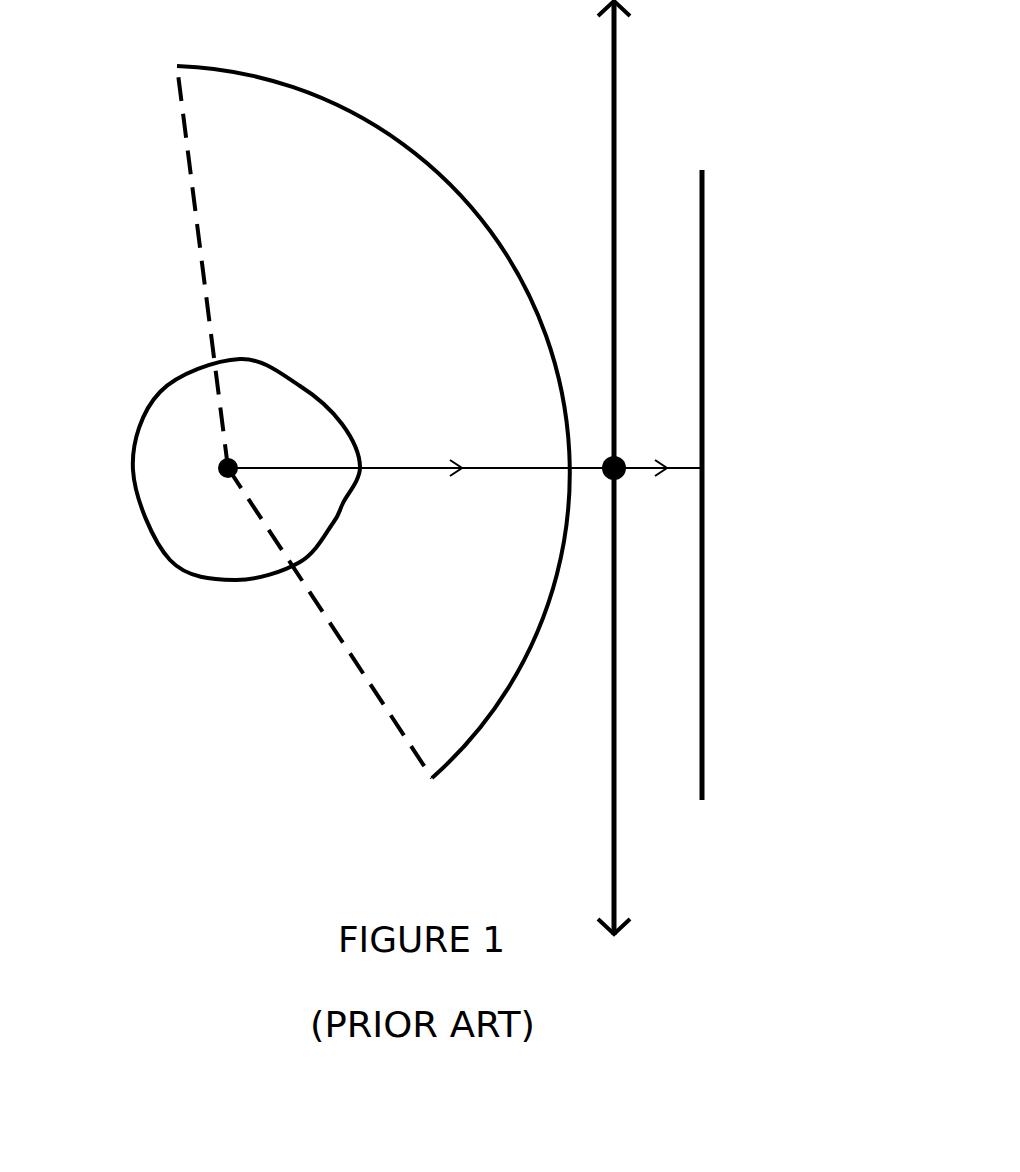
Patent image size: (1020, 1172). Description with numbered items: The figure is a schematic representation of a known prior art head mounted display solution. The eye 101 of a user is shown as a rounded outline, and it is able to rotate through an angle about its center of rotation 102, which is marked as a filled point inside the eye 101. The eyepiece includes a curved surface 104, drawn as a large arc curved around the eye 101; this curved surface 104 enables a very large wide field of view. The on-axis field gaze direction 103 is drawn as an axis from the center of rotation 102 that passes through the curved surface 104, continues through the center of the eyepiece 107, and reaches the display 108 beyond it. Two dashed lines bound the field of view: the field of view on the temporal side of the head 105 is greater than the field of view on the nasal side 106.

The eye 101 is at (210, 583).
The center of rotation 102 is at (229, 478).
The on-axis field gaze direction 103 is at (480, 470).
The curved surface 104 is at (450, 187).
The temporal side of the head 105 is at (190, 204).
The nasal side 106 is at (357, 677).
The center of the eyepiece 107 is at (614, 165).
The display 108 is at (702, 246).